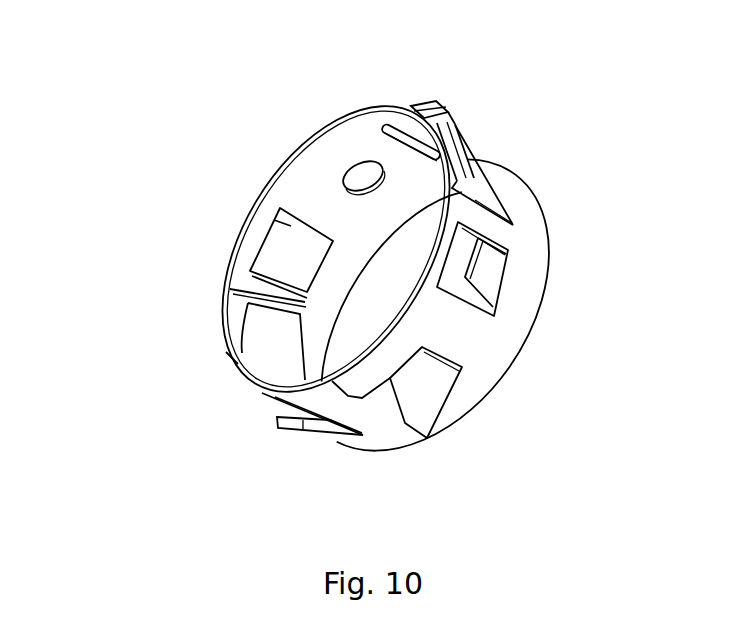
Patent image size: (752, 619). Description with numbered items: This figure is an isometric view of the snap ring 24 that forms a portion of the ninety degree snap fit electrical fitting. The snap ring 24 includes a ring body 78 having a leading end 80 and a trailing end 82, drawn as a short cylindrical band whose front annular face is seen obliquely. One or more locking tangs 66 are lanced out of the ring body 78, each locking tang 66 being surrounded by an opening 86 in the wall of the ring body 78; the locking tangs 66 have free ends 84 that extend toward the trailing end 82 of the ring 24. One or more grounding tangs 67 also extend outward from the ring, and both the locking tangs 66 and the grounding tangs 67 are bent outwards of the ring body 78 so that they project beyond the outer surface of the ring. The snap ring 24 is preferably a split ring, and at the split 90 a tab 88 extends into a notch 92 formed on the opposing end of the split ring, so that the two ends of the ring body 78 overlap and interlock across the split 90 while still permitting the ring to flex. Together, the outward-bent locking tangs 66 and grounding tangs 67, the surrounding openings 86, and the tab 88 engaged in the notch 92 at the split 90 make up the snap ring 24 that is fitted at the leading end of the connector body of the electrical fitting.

The snap ring 24 is at (106, 132).
The trailing end 82 is at (293, 160).
The leading end 80 is at (538, 310).
The ring body 78 is at (488, 352).
The free ends 84 is at (428, 101).
The grounding tangs 67 is at (480, 152).
The locking tangs 66 is at (487, 272).
The opening 86 is at (273, 222).
The tab 88 is at (417, 386).
The split 90 is at (450, 387).
The notch 92 is at (446, 350).